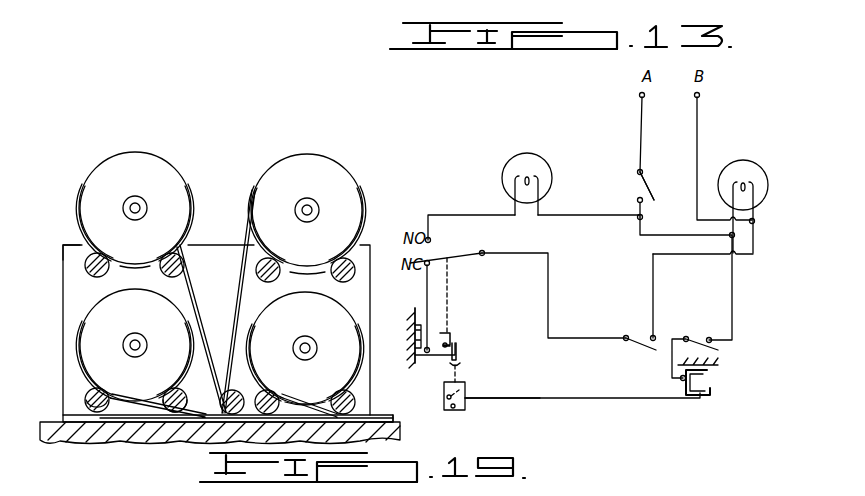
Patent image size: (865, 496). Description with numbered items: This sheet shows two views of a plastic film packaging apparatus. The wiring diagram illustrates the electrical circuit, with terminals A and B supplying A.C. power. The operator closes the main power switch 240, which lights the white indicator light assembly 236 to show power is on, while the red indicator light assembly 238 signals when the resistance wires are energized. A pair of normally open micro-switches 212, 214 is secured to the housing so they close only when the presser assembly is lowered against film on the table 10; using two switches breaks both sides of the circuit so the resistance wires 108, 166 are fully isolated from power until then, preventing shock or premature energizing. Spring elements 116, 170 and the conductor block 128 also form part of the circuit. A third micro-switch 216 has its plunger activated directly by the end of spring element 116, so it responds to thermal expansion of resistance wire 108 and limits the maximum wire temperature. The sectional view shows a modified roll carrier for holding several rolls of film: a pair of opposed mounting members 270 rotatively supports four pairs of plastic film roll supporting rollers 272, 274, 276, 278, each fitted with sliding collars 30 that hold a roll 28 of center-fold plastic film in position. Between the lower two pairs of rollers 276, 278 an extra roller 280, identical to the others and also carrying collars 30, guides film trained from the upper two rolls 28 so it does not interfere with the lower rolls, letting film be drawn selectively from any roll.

In FIG. 19, the roll of center-fold plastic film 28 is at (175, 170).
In FIG. 19, the collars 30 is at (88, 253).
In FIG. 19, the mounting members 270 is at (66, 268).
In FIG. 19, the plastic film roll supporting rollers 272 is at (160, 262).
In FIG. 19, the plastic film roll supporting rollers 274 is at (330, 268).
In FIG. 19, the plastic film roll supporting rollers 278 is at (328, 398).
In FIG. 19, the plastic film roll supporting rollers 276 is at (100, 408).
In FIG. 19, the extra roller 280 is at (167, 408).
In FIG. 19, the table 10 is at (398, 430).
In FIG. 13, the red indicator light assembly 238 is at (528, 158).
In FIG. 13, the white indicator light assembly 236 is at (757, 165).
In FIG. 13, the main power switch 240 is at (628, 189).
In FIG. 13, the third micro-switch 216 is at (458, 254).
In FIG. 13, the normally open micro-switch 212 is at (618, 326).
In FIG. 13, the normally open micro-switch 214 is at (710, 331).
In FIG. 13, the spring element 170 is at (712, 400).
In FIG. 13, the resistance wire 108 is at (458, 352).
In FIG. 13, the spring element 116 is at (434, 358).
In FIG. 13, the conductor block 128 is at (465, 388).
In FIG. 13, the resistance wire 166 is at (541, 399).